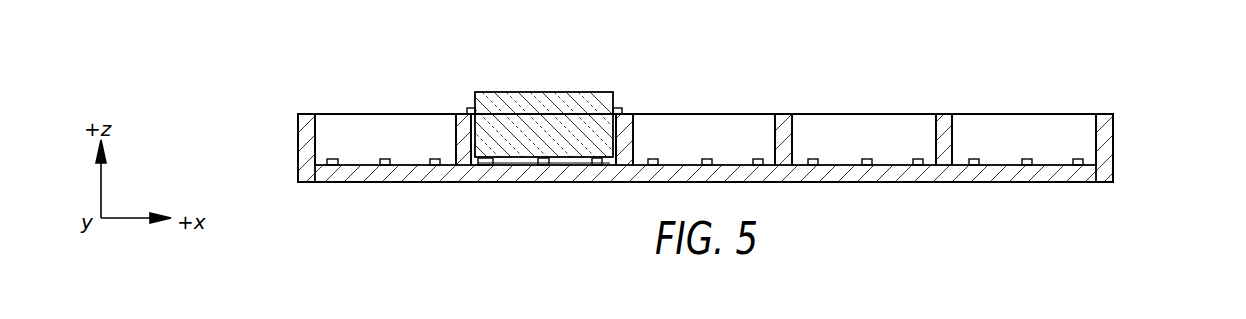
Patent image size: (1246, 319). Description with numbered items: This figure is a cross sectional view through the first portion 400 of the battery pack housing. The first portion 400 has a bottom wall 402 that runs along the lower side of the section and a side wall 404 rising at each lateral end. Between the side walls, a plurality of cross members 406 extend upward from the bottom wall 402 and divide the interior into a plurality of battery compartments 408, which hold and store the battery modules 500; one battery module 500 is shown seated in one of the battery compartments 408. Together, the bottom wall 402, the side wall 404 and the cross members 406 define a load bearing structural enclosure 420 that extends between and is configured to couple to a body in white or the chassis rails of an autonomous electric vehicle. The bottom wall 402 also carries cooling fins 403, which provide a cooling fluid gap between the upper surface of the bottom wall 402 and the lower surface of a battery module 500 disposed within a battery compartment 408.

The first portion 400 is at (1128, 65).
The bottom wall 402 is at (1018, 183).
The cooling fins 403 is at (383, 167).
The side wall 404 is at (298, 155).
The cross members 406 is at (456, 137).
The battery compartments 408 is at (378, 110).
The load bearing structural enclosure 420 is at (250, 124).
The battery modules 500 is at (538, 91).